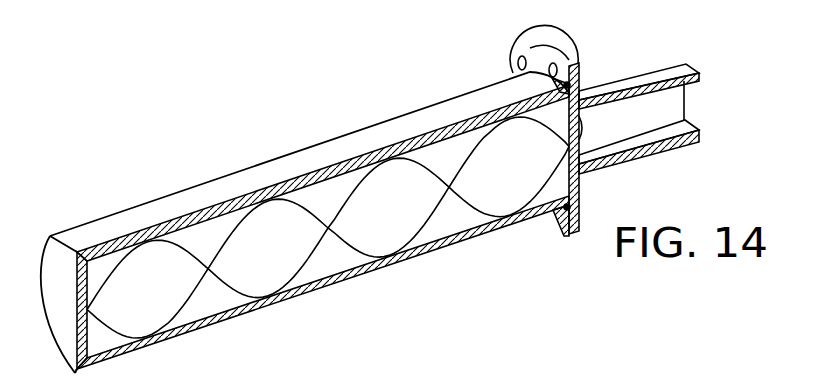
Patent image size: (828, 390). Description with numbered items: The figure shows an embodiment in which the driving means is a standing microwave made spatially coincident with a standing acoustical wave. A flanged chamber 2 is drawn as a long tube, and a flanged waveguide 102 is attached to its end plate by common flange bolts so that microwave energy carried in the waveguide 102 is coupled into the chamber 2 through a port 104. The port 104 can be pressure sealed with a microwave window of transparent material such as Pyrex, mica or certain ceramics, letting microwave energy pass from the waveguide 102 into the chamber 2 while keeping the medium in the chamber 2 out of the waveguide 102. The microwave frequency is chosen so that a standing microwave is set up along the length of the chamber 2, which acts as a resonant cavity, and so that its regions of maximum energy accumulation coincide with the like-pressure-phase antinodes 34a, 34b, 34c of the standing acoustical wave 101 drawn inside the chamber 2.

The flanged chamber 2 is at (465, 100).
The standing acoustical wave 101 is at (438, 224).
The flanged waveguide 102 is at (637, 83).
The port 104 is at (567, 138).
The like-pressure-phase antinode 34a is at (568, 144).
The like-pressure-phase antinode 34b is at (332, 226).
The like-pressure-phase antinode 34c is at (87, 309).